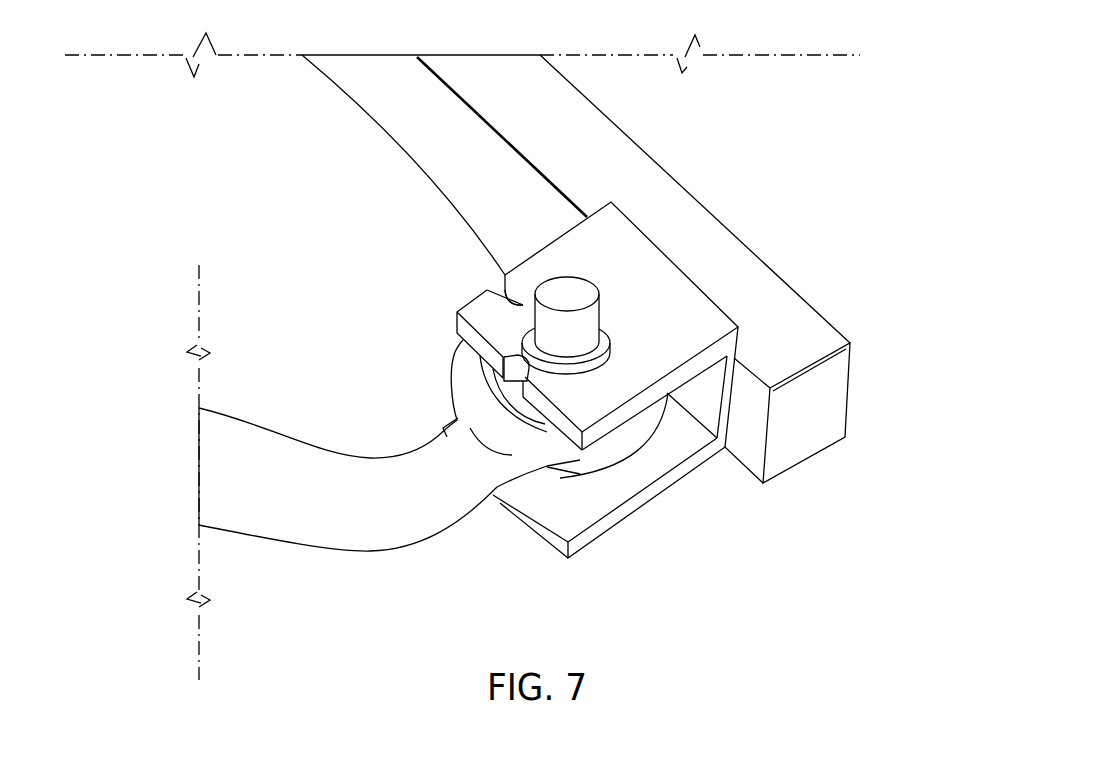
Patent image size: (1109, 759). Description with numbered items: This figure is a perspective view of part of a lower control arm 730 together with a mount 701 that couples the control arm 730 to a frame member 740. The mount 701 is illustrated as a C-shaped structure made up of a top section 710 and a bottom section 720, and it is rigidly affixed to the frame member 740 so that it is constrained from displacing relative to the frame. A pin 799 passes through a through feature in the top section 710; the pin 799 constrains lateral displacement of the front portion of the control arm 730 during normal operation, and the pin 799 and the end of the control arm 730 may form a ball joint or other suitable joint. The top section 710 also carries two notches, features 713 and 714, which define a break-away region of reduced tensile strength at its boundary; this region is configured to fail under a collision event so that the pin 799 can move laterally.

The mount 701 is at (702, 331).
The top section 710 is at (450, 313).
The notch feature 713 is at (498, 366).
The notch feature 714 is at (490, 280).
The bottom section 720 is at (642, 526).
The lower control arm 730 is at (437, 508).
The frame member 740 is at (574, 128).
The pin 799 is at (600, 270).